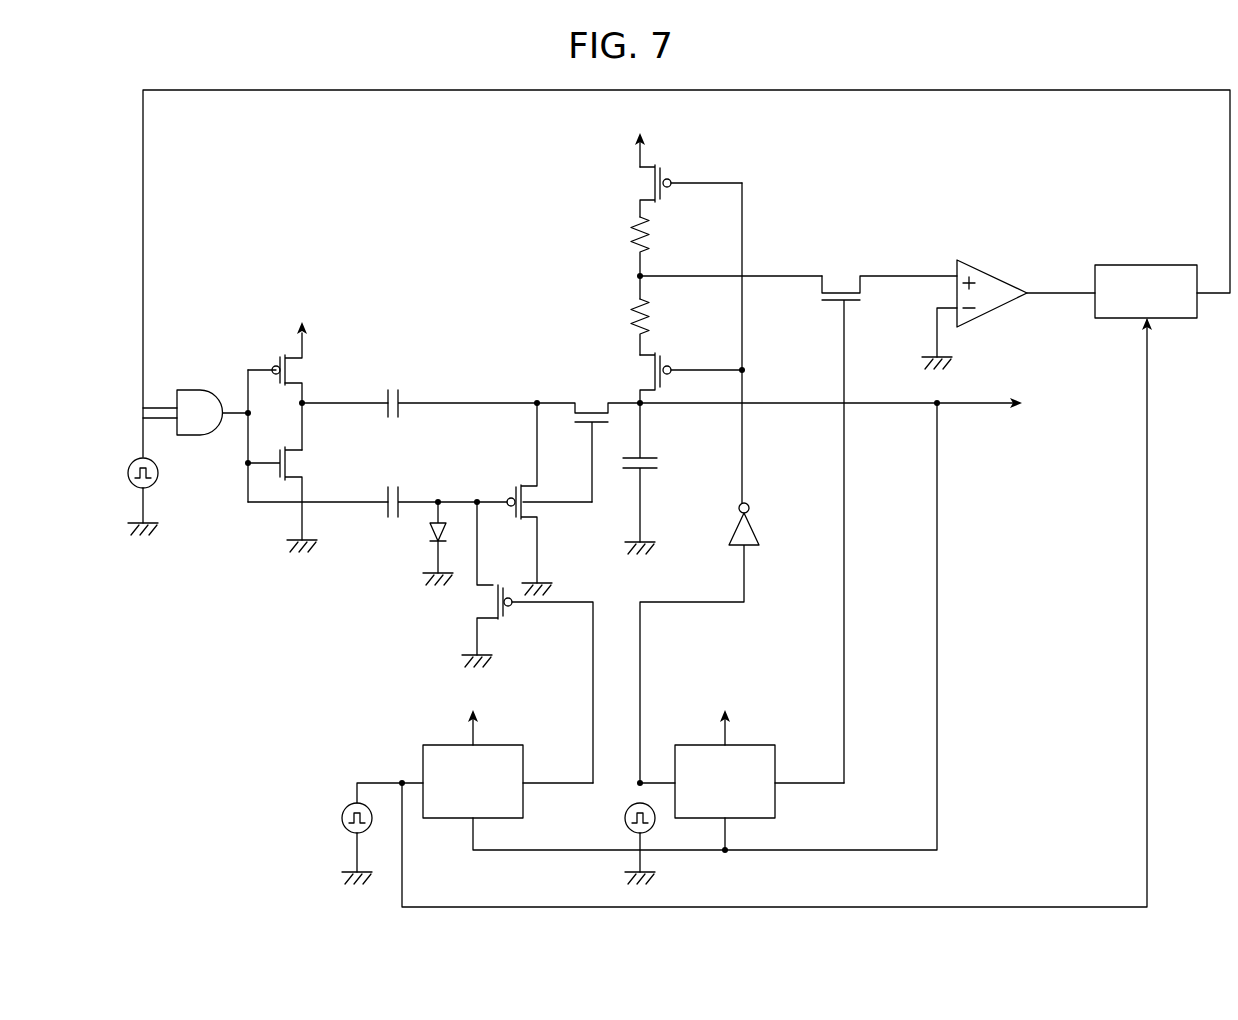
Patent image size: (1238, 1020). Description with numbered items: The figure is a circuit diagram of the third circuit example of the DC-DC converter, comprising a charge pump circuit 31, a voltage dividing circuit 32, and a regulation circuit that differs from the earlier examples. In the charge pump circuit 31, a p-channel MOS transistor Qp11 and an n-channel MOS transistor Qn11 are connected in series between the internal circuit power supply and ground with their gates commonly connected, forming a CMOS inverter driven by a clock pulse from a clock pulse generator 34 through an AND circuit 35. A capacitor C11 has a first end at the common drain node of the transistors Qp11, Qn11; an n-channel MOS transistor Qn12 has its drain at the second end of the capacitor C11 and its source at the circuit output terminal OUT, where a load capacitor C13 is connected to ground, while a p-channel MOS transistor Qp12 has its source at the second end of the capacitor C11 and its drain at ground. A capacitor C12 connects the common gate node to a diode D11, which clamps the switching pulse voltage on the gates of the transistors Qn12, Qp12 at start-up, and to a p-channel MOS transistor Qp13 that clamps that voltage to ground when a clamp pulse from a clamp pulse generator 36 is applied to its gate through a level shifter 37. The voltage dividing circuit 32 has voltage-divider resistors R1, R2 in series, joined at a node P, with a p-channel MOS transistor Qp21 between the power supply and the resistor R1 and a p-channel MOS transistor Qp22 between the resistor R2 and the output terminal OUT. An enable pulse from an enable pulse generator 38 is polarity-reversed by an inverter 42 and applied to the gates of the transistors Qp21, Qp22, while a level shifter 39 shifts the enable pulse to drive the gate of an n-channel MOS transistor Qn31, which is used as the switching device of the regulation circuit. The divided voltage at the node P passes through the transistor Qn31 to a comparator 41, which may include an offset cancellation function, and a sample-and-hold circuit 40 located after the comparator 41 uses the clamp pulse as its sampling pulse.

The charge pump circuit 31 is at (220, 577).
The voltage dividing circuit 32 is at (523, 218).
The clock pulse generator 34 is at (127, 476).
The AND circuit 35 is at (192, 392).
The clamp pulse generator 36 is at (342, 822).
The level shifter 37 is at (523, 752).
The enable pulse generator 38 is at (625, 822).
The level shifter 39 is at (775, 752).
The sample-and-hold circuit 40 is at (1146, 265).
The comparator 41 is at (1000, 275).
The inverter 42 is at (762, 520).
The p-channel MOS transistor Qp11 is at (300, 371).
The n-channel MOS transistor Qn11 is at (300, 463).
The p-channel MOS transistor Qp12 is at (530, 511).
The p-channel MOS transistor Qp13 is at (484, 602).
The n-channel MOS transistor Qn12 is at (592, 412).
The p-channel MOS transistor Qp21 is at (636, 183).
The p-channel MOS transistor Qp22 is at (636, 367).
The n-channel MOS transistor Qn31 is at (842, 290).
The capacitor C11 is at (393, 383).
The capacitor C12 is at (393, 482).
The load capacitor C13 is at (664, 464).
The diode D11 is at (428, 540).
The voltage-divider resistor R1 is at (628, 234).
The voltage-divider resistor R2 is at (655, 316).
The node P is at (635, 276).
The circuit output terminal OUT is at (644, 407).